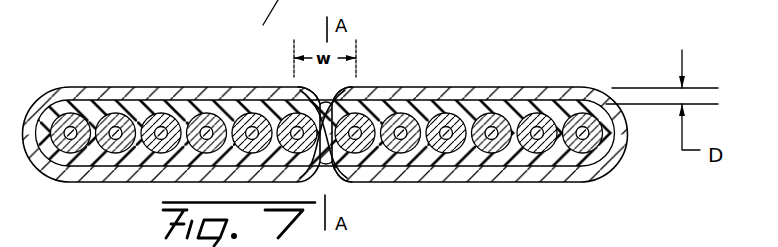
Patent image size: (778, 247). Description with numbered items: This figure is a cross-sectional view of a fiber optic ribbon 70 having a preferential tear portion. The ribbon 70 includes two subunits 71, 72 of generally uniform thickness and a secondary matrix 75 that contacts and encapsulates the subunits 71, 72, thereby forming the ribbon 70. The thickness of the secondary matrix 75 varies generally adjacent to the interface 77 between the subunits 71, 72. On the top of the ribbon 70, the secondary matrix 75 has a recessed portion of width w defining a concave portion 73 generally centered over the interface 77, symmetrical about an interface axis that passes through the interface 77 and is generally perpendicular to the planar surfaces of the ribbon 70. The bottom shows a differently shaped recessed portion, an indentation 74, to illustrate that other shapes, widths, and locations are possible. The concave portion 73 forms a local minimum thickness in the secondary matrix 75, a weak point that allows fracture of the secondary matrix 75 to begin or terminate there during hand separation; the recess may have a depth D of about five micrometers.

The ribbon 70 is at (32, 82).
The subunit 71 is at (163, 112).
The subunit 72 is at (526, 112).
The concave portion 73 is at (357, 79).
The indentation 74 is at (331, 172).
The secondary matrix 75 is at (547, 88).
The interface 77 is at (290, 83).